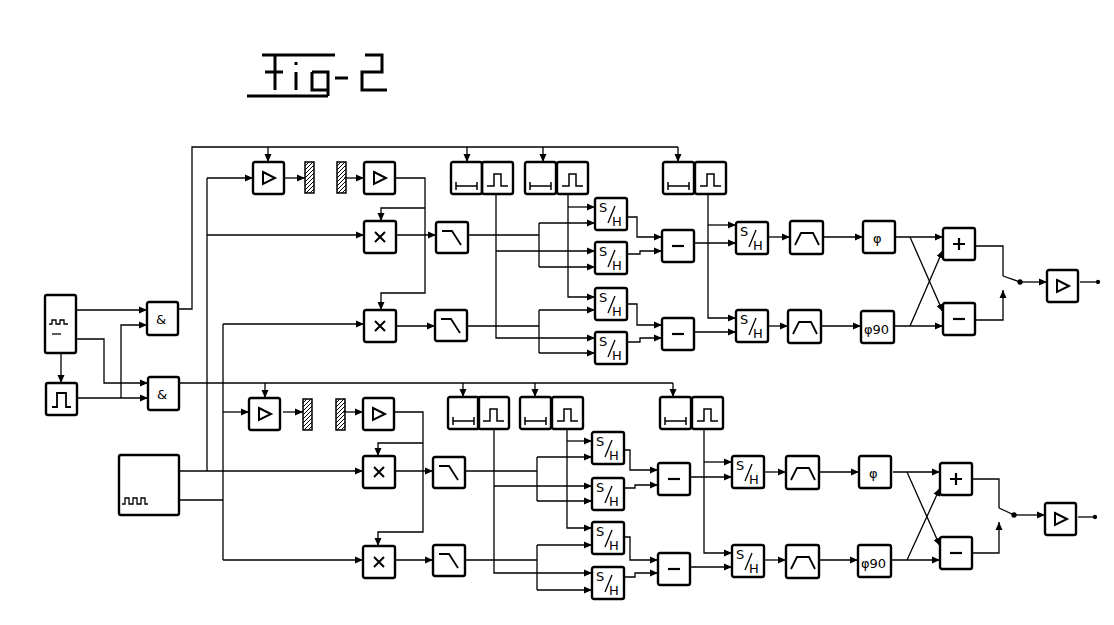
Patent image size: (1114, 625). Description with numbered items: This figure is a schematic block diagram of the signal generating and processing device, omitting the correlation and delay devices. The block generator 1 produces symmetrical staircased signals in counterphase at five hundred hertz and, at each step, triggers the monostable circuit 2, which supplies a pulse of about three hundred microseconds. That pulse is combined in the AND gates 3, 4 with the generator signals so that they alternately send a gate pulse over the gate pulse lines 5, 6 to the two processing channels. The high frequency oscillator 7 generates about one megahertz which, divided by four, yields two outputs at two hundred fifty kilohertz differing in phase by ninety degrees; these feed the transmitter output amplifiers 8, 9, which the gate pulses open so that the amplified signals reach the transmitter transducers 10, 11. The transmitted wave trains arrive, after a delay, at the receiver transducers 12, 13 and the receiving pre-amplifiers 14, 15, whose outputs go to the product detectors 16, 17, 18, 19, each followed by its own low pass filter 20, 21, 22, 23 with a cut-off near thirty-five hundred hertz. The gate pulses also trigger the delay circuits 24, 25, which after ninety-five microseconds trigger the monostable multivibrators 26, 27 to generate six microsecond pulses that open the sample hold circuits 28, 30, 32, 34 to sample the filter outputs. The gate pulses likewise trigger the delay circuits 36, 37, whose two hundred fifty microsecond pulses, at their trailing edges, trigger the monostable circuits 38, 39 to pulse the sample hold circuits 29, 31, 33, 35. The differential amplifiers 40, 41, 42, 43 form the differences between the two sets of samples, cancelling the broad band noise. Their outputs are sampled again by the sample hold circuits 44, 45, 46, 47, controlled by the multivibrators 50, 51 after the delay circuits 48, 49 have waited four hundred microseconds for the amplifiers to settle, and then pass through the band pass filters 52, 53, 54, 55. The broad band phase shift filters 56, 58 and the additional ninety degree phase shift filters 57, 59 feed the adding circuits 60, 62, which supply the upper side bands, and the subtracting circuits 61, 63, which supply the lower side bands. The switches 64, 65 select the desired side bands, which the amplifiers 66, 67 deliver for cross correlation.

The block generator 1 is at (60, 316).
The monostable circuit 2 is at (61, 408).
The AND gate 3 is at (162, 311).
The AND gate 4 is at (163, 385).
The gate pulse line 5 is at (192, 268).
The gate pulse line 6 is at (239, 383).
The high frequency oscillator 7 is at (149, 477).
The transmitter output amplifier 8 is at (268, 186).
The transmitter output amplifier 9 is at (264, 423).
The transmitter transducer 10 is at (306, 186).
The transmitter transducer 11 is at (308, 423).
The receiver transducer 12 is at (339, 186).
The receiver transducer 13 is at (339, 423).
The receiving pre-amplifier 14 is at (389, 177).
The receiving pre-amplifier 15 is at (389, 413).
The product detector 16 is at (390, 236).
The product detector 17 is at (390, 325).
The product detector 18 is at (389, 471).
The product detector 19 is at (389, 560).
The low pass filter 20 is at (452, 229).
The low pass filter 21 is at (451, 317).
The low pass filter 22 is at (449, 464).
The low pass filter 23 is at (449, 552).
The delay circuit 24 is at (456, 178).
The delay circuit 25 is at (453, 413).
The monostable multivibrator 26 is at (497, 169).
The monostable multivibrator 27 is at (493, 404).
The sample hold circuit 28 is at (621, 261).
The sample hold circuit 29 is at (621, 214).
The sample hold circuit 30 is at (621, 351).
The sample hold circuit 31 is at (621, 304).
The sample hold circuit 32 is at (618, 495).
The sample hold circuit 33 is at (618, 447).
The sample hold circuit 34 is at (618, 585).
The sample hold circuit 35 is at (618, 537).
The delay circuit 36 is at (540, 186).
The delay circuit 37 is at (535, 421).
The monostable multivibrator 38 is at (582, 177).
The monostable multivibrator 39 is at (578, 412).
The differential amplifier 40 is at (678, 238).
The differential amplifier 41 is at (678, 326).
The differential amplifier 42 is at (674, 471).
The differential amplifier 43 is at (674, 561).
The sample hold circuit 44 is at (752, 230).
The sample hold circuit 45 is at (752, 318).
The sample hold circuit 46 is at (748, 464).
The sample hold circuit 47 is at (748, 553).
The delay circuit 48 is at (667, 178).
The delay circuit 49 is at (665, 413).
The multivibrator 50 is at (720, 177).
The multivibrator 51 is at (717, 413).
The band pass filter 52 is at (806, 229).
The band pass filter 53 is at (804, 318).
The band pass filter 54 is at (802, 464).
The band pass filter 55 is at (802, 553).
The broad band phase shift filter 56 is at (879, 229).
The phase shift filter 57 is at (877, 319).
The broad band phase shift filter 58 is at (875, 464).
The phase shift filter 59 is at (874, 553).
The adding circuit 60 is at (959, 236).
The subtracting circuit 61 is at (959, 311).
The adding circuit 62 is at (956, 471).
The subtracting circuit 63 is at (956, 545).
The switch 64 is at (1025, 272).
The switch 65 is at (1022, 507).
The amplifier 66 is at (1062, 277).
The amplifier 67 is at (1060, 510).